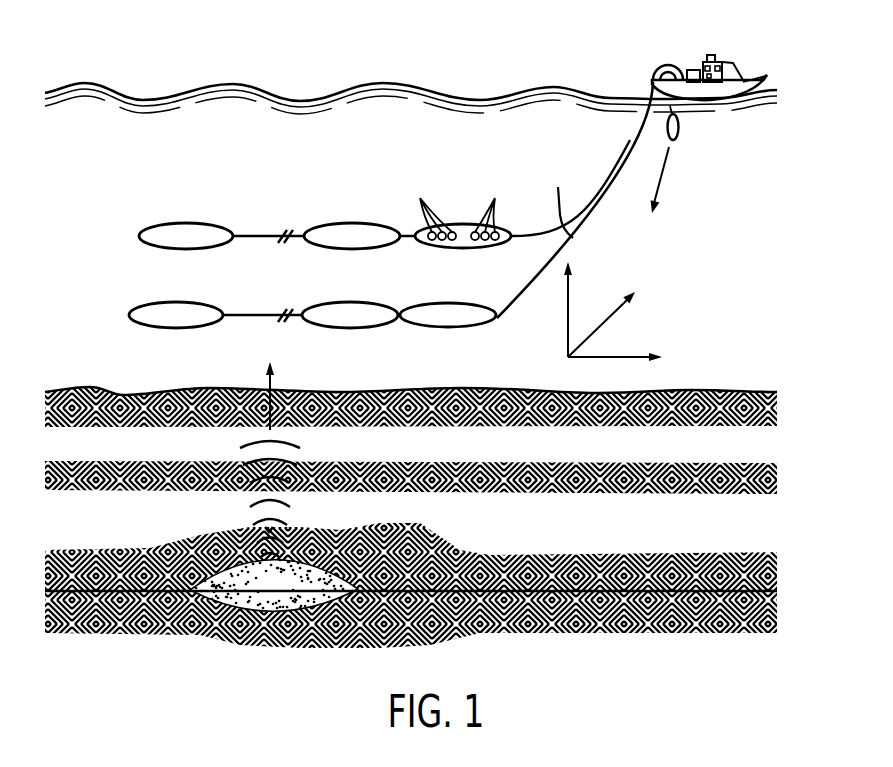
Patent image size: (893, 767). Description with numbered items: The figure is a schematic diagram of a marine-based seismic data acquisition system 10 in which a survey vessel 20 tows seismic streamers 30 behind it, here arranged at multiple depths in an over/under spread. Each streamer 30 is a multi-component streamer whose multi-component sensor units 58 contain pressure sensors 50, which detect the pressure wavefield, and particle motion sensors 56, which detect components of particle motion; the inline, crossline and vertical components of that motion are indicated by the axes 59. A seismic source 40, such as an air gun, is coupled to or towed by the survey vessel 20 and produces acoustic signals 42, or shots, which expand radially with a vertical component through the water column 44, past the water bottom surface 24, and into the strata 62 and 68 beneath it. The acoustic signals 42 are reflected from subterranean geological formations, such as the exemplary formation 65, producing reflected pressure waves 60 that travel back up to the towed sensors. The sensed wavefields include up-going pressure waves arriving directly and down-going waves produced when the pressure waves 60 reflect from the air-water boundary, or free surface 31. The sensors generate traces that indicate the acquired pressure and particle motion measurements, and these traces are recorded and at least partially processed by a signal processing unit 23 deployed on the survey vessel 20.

The marine-based seismic data acquisition system 10 is at (214, 52).
The survey vessel 20 is at (746, 73).
The signal processing unit 23 is at (692, 70).
The water bottom surface 24 is at (718, 390).
The seismic streamer 30 is at (620, 167).
The free surface 31 is at (357, 87).
The seismic source 40 is at (679, 128).
The acoustic signal 42 is at (663, 174).
The water column 44 is at (726, 275).
The pressure sensor 50 is at (433, 204).
The particle motion sensor 56 is at (487, 204).
The multi-component sensor unit 58 is at (152, 227).
The axes 59 is at (545, 361).
The pressure waves 60 is at (240, 510).
The strata 62 is at (493, 566).
The formation 65 is at (260, 598).
The strata 68 is at (655, 621).